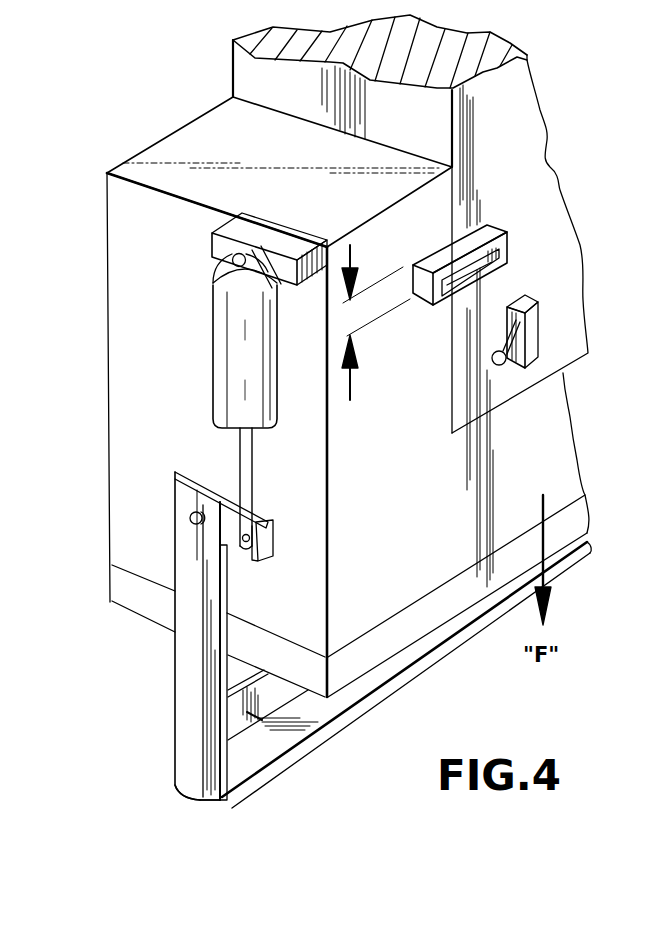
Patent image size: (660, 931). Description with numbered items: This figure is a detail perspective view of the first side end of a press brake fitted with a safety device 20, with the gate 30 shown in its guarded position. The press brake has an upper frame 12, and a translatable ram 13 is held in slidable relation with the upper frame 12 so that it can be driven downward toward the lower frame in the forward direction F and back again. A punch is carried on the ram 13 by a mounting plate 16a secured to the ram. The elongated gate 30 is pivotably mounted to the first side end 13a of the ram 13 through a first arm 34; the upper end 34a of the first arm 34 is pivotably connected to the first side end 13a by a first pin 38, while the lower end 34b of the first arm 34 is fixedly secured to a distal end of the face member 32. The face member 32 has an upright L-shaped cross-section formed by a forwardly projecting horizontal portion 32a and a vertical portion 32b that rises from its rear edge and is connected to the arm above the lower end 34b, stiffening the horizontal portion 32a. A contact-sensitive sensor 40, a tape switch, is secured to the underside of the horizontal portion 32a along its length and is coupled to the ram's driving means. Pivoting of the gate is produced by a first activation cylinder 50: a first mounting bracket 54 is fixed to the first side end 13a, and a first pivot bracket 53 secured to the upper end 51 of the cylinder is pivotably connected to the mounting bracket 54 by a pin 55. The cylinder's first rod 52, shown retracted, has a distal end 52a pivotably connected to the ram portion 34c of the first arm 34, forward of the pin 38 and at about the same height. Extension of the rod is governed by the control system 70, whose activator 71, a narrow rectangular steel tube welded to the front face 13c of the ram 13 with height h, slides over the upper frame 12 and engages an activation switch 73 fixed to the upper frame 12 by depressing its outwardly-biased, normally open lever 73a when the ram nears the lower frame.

The upper frame 12 is at (530, 107).
The ram 13 is at (192, 133).
The first side end 13a is at (120, 238).
The front face 13c is at (406, 443).
The mounting plate 16a is at (137, 598).
The safety device 20 is at (138, 666).
The gate 30 is at (160, 746).
The face member 32 is at (406, 675).
The horizontal portion 32a is at (375, 673).
The vertical portion 32b is at (262, 720).
The first arm 34 is at (210, 638).
The upper end 34a is at (180, 472).
The lower end 34b is at (227, 797).
The ram portion 34c is at (267, 520).
The first pin 38 is at (188, 518).
The sensor 40 is at (192, 795).
The first activation cylinder 50 is at (231, 397).
The upper end 51 is at (213, 290).
The first rod 52 is at (238, 455).
The distal end 52a is at (245, 550).
The first pivot bracket 53 is at (247, 277).
The first mounting bracket 54 is at (240, 227).
The pin 55 is at (217, 252).
The control system 70 is at (397, 225).
The activator 71 is at (426, 286).
The activation switch 73 is at (534, 347).
The lever 73a is at (515, 360).